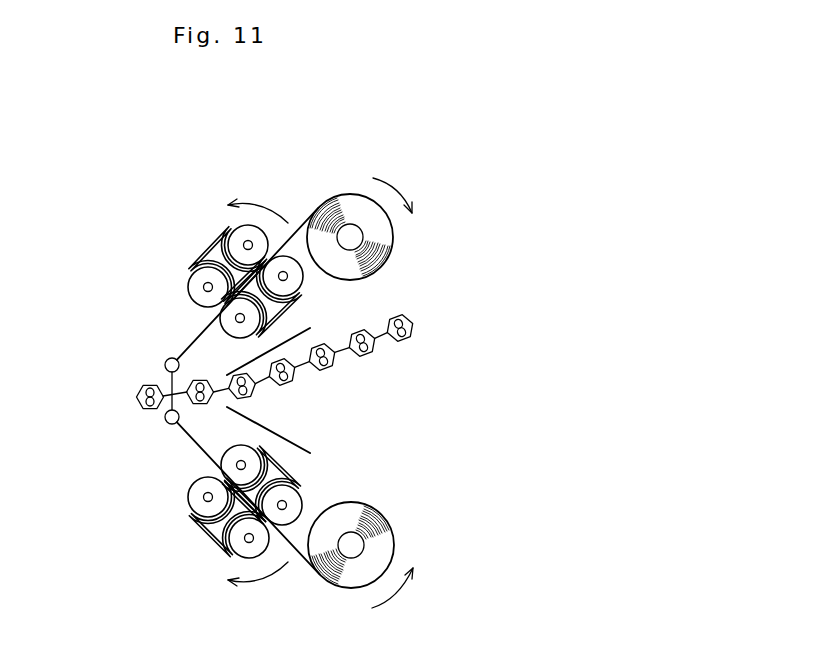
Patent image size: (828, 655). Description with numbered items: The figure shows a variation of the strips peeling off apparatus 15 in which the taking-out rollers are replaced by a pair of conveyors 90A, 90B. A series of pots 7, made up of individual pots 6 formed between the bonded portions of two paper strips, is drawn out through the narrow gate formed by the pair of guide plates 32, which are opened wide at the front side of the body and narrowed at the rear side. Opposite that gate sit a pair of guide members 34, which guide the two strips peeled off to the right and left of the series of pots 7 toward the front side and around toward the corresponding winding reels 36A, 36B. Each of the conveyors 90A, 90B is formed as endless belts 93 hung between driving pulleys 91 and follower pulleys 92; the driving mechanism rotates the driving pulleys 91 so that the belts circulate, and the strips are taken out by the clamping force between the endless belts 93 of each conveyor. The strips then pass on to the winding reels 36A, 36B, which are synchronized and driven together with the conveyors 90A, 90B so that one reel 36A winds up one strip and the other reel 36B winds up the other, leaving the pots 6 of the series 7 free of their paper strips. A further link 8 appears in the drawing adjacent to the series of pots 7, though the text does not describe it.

The strips peeling off apparatus 15 is at (310, 177).
The winding reel 36A is at (358, 195).
The winding reel 36B is at (393, 525).
The conveyor 90A is at (246, 348).
The conveyor 90B is at (200, 548).
The driving pulley 91 is at (228, 322).
The follower pulley 92 is at (250, 552).
The endless belt 93 is at (270, 313).
The guide member 34 is at (164, 363).
The guide plate 32 is at (293, 443).
The chain link 8 is at (138, 402).
The pot 6 is at (335, 368).
The series of pots 7 is at (306, 404).